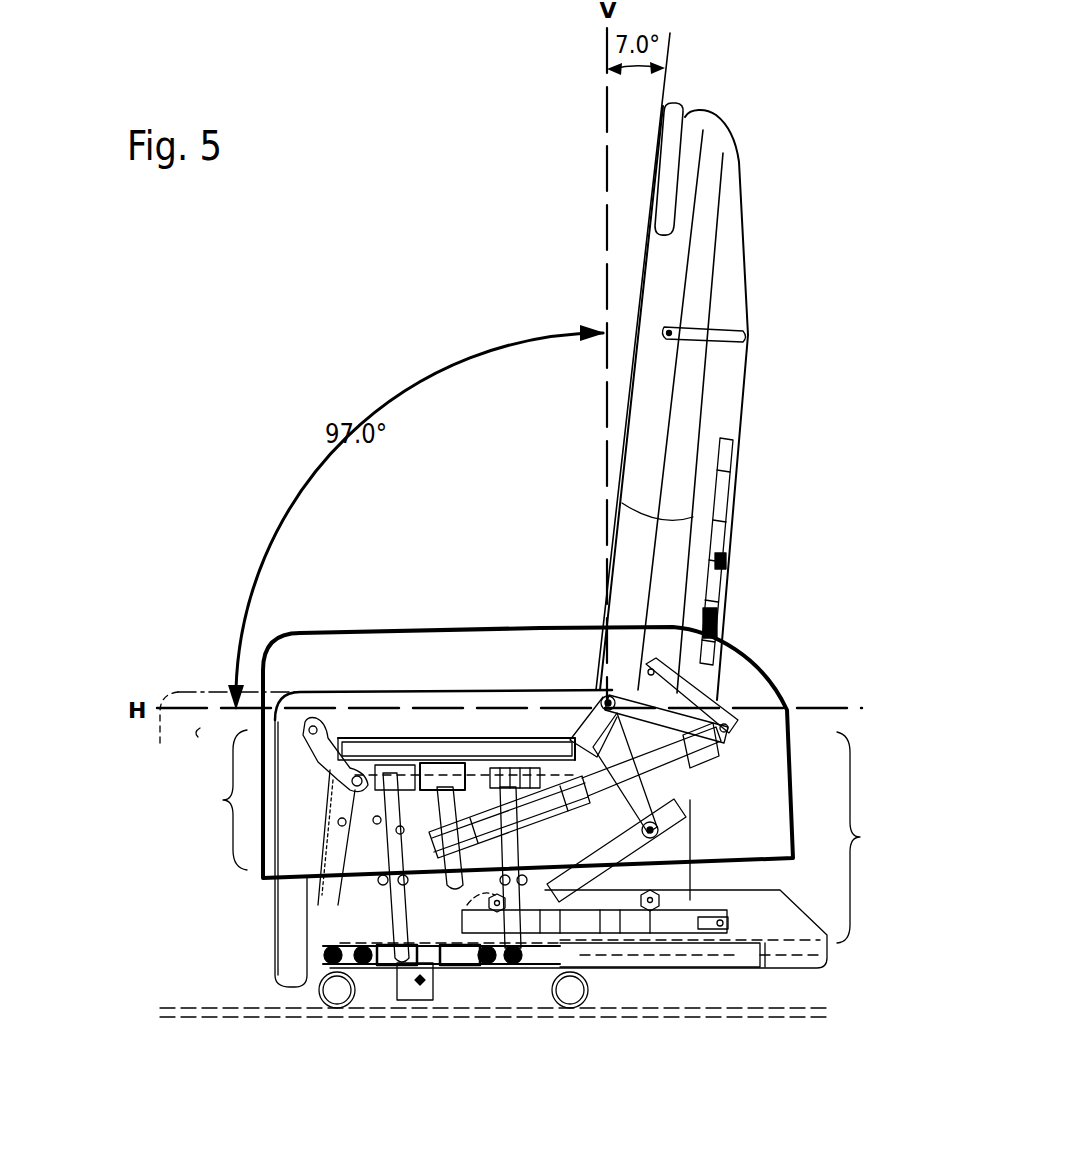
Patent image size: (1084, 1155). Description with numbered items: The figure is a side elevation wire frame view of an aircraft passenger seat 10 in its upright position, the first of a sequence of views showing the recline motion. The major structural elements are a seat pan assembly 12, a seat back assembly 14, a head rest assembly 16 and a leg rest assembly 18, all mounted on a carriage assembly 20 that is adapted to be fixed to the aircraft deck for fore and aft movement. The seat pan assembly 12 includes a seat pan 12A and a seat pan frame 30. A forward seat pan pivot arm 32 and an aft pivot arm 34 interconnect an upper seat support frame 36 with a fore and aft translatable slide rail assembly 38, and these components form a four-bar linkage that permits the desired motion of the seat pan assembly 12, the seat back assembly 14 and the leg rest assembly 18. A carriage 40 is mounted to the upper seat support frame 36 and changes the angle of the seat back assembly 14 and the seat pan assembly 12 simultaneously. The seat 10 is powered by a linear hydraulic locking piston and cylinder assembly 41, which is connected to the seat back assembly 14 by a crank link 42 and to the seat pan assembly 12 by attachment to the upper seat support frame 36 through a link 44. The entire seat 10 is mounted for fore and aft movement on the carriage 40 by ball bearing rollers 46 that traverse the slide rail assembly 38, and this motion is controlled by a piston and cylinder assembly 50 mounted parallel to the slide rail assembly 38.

The vehicle seat 10 is at (289, 356).
The seat pan assembly 12 is at (402, 722).
The seat pan 12A is at (477, 740).
The seat back assembly 14 is at (645, 348).
The head rest assembly 16 is at (700, 200).
The leg rest assembly 18 is at (240, 921).
The carriage assembly 20 is at (617, 850).
The seat pan frame 30 is at (399, 780).
The forward seat pan pivot arm 32 is at (407, 910).
The aft pivot arm 34 is at (568, 968).
The upper seat support frame 36 is at (355, 778).
The slide rail assembly 38 is at (640, 950).
The carriage 40 is at (697, 873).
The piston and cylinder assembly 41 is at (650, 763).
The crank link 42 is at (703, 695).
The link 44 is at (420, 985).
The ball bearing rollers 46 is at (320, 1005).
The piston and cylinder assembly 50 is at (613, 920).